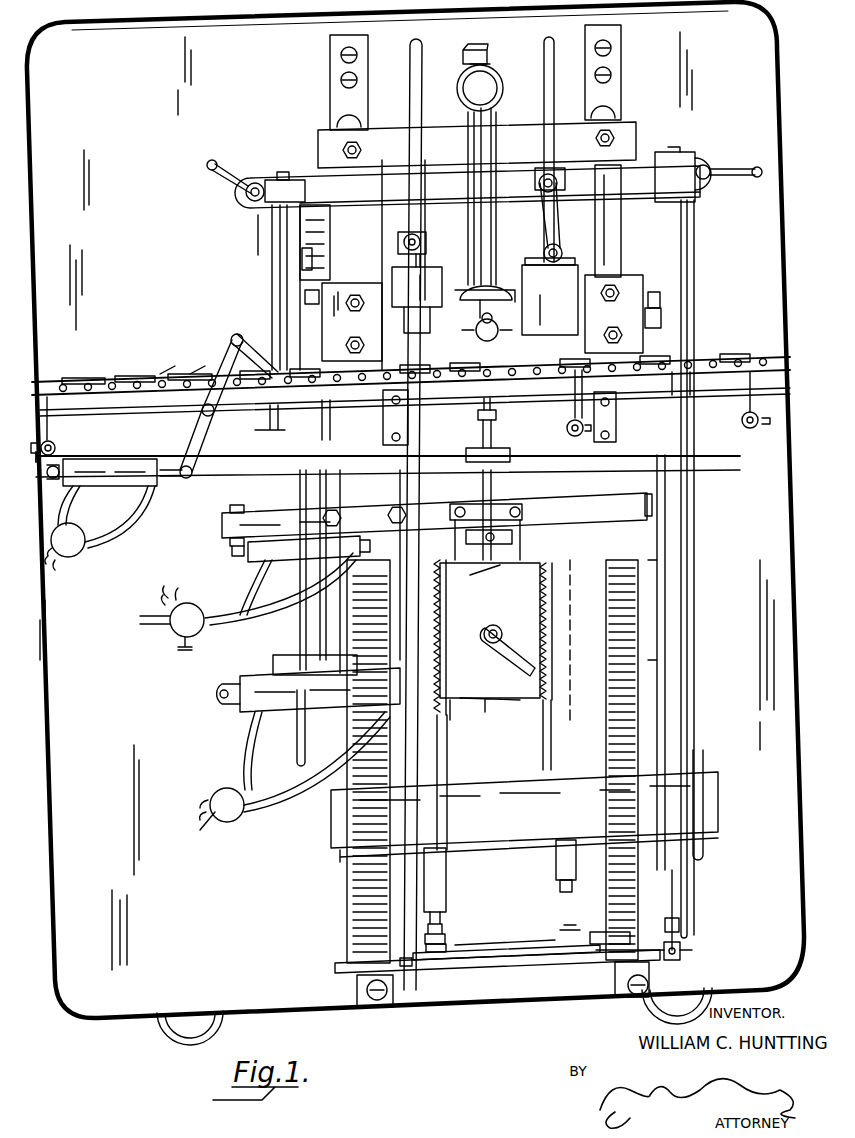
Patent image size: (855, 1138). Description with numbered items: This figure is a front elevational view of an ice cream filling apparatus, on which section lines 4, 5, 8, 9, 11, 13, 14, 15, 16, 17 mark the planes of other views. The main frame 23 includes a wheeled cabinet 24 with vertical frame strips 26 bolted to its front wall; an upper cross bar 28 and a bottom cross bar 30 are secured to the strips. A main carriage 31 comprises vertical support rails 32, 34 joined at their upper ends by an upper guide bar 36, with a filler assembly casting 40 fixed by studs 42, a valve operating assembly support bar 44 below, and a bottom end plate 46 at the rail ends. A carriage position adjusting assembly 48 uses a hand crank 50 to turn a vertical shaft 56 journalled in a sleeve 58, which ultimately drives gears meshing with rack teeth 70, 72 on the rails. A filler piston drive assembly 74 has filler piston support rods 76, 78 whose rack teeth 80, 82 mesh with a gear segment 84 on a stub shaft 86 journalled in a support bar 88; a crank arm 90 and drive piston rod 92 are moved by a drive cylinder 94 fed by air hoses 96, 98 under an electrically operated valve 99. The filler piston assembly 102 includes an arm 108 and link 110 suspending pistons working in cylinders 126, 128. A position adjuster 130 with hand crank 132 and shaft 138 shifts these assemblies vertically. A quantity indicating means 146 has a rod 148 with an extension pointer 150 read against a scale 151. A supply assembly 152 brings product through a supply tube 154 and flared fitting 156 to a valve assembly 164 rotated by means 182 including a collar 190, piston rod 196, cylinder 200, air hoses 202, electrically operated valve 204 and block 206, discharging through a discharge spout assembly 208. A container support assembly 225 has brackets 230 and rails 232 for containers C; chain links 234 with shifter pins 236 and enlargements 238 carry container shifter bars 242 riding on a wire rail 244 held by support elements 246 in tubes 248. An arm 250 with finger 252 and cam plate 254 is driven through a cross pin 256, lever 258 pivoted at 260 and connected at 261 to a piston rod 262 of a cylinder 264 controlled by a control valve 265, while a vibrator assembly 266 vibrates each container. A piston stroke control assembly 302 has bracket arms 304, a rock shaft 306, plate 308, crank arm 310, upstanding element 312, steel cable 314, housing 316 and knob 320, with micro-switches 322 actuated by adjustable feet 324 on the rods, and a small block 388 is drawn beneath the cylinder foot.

The section line 4- 4 is at (302, 153).
The section line 5- 5 is at (186, 198).
The section line 8- 8 is at (382, 348).
The main shaft / section line 9- 9 is at (458, 20).
The section line 11- 11 is at (492, 472).
The section line 13- 13 is at (409, 655).
The section line 14- 14 is at (172, 690).
The section line 15- 15 is at (285, 700).
The section line 16- 16 is at (314, 843).
The section line 17- 17 is at (329, 943).
The main frame 23 is at (316, 56).
The wheeled cabinet 24 is at (122, 1012).
The frame strips 26 is at (360, 65).
The upper cross bar 28 is at (268, 176).
The bottom cross bar 30 is at (495, 838).
The main carriage 31 is at (440, 128).
The support rail 32 is at (366, 488).
The support rail 34 is at (606, 242).
The upper guide bar 36 is at (383, 135).
The filler assembly casting 40 is at (330, 312).
The studs 42 is at (360, 315).
The valve operating assembly support bar 44 is at (620, 528).
The bottom end plate 46 is at (535, 985).
The carriage position adjusting assembly 48 is at (711, 768).
The hand crank 50 is at (715, 182).
The vertical shaft 56 is at (696, 684).
The sleeve 58 is at (690, 243).
The rack teeth 70 is at (388, 750).
The rack teeth 72 is at (595, 752).
The filler piston drive assembly 74 is at (541, 750).
The filler piston support rod 76 is at (403, 514).
The filler piston support rod 78 is at (553, 60).
The rack teeth 80 is at (452, 718).
The rack teeth 82 is at (538, 604).
The gear segment 84 is at (555, 670).
The stub shaft 86 is at (505, 636).
The filler piston drive assembly support bar 88 is at (668, 648).
The crank arm 90 is at (488, 644).
The drive piston rod 92 is at (495, 706).
The drive cylinder 94 is at (332, 708).
The air hose 96 is at (242, 768).
The air hose 98 is at (255, 812).
The electrically operated valve 99 is at (216, 822).
The filler piston assembly 102 is at (566, 236).
The arm 108 is at (406, 234).
The link 110 is at (428, 238).
The cylinder 126 is at (406, 292).
The cylinder 128 is at (550, 296).
The position adjuster 130 is at (230, 156).
The hand crank 132 is at (245, 192).
The shaft 138 is at (298, 496).
The quantity indicating means 146 is at (296, 240).
The rod 148 is at (304, 282).
The extension pointer 150 is at (285, 218).
The scale 151 is at (300, 256).
The product supply assembly 152 is at (462, 48).
The supply tube 154 is at (488, 60).
The flared fitting 156 is at (500, 78).
The valve assembly 164 is at (509, 288).
The valve rotating means 182 is at (474, 498).
The collar 190 is at (478, 562).
The piston rod 196 is at (398, 565).
The cylinder 200 is at (280, 562).
The air hoses 202 is at (258, 610).
The electrically operated valve 204 is at (178, 646).
The block 206 is at (222, 528).
The discharge spout assembly 208 is at (487, 320).
The container support assembly 225 is at (717, 482).
The brackets 230 is at (635, 412).
The rails 232 is at (690, 398).
The links 234 is at (86, 376).
The shifter pin 236 is at (165, 364).
The enlargements 238 is at (752, 356).
The container shifter bars 242 is at (676, 402).
The wire rail 244 is at (128, 374).
The support elements 246 is at (58, 446).
The tubes 248 is at (70, 448).
The arm 250 is at (340, 398).
The finger 252 is at (470, 404).
The cam plate 254 is at (282, 398).
The cross pin 256 is at (230, 340).
The lever 258 is at (226, 358).
The pivot 260 is at (214, 426).
The pivotal connection 261 is at (189, 478).
The piston rod 262 is at (170, 480).
The cylinder 264 is at (102, 503).
The control valve 265 is at (80, 555).
The vibrator assembly 266 is at (516, 450).
The piston stroke control assembly 302 is at (514, 946).
The bracket arms 304 is at (405, 950).
The rock shaft 306 is at (497, 972).
The plate 308 is at (505, 942).
The crank arm 310 is at (682, 976).
The upstanding element 312 is at (680, 925).
The steel cable 314 is at (700, 866).
The housing 316 is at (662, 314).
The knob 320 is at (662, 297).
The micro-switches 322 is at (440, 966).
The adjustable feet 324 is at (560, 870).
The block 388 is at (461, 935).
The container C is at (725, 336).